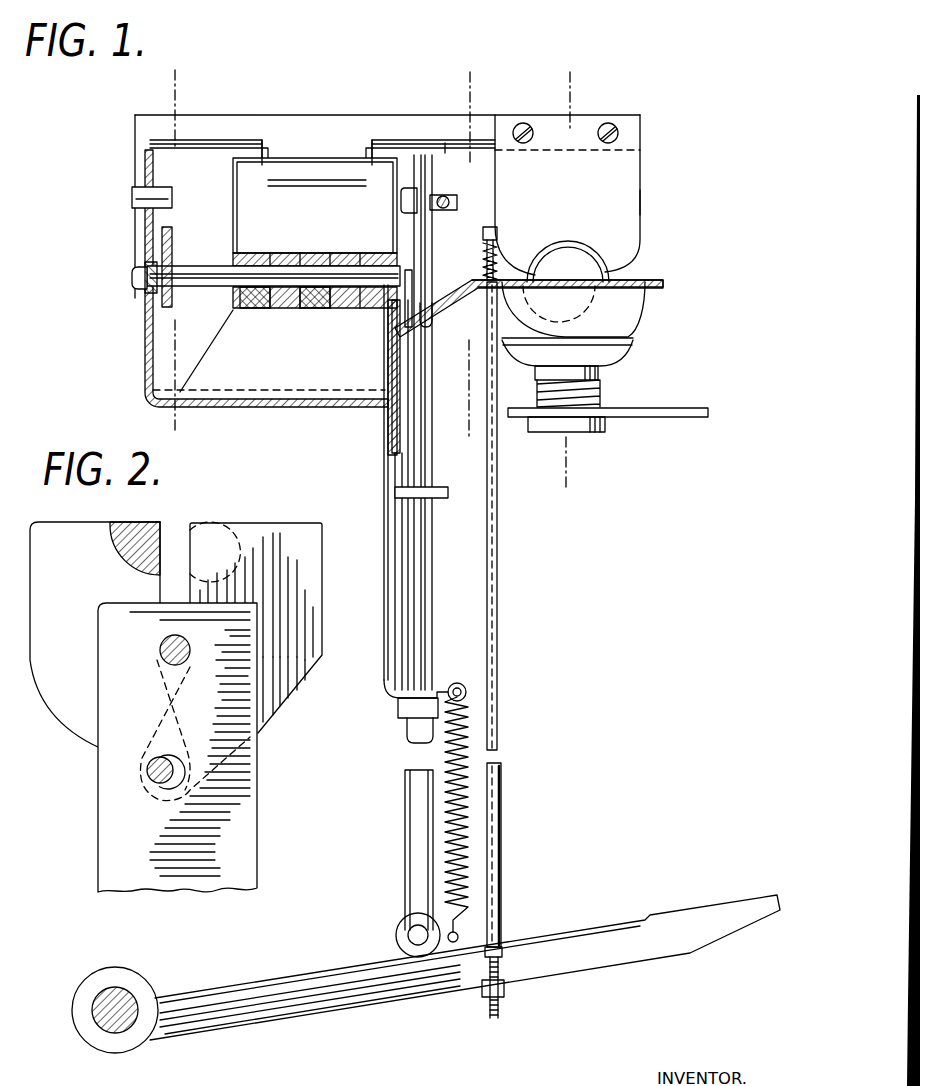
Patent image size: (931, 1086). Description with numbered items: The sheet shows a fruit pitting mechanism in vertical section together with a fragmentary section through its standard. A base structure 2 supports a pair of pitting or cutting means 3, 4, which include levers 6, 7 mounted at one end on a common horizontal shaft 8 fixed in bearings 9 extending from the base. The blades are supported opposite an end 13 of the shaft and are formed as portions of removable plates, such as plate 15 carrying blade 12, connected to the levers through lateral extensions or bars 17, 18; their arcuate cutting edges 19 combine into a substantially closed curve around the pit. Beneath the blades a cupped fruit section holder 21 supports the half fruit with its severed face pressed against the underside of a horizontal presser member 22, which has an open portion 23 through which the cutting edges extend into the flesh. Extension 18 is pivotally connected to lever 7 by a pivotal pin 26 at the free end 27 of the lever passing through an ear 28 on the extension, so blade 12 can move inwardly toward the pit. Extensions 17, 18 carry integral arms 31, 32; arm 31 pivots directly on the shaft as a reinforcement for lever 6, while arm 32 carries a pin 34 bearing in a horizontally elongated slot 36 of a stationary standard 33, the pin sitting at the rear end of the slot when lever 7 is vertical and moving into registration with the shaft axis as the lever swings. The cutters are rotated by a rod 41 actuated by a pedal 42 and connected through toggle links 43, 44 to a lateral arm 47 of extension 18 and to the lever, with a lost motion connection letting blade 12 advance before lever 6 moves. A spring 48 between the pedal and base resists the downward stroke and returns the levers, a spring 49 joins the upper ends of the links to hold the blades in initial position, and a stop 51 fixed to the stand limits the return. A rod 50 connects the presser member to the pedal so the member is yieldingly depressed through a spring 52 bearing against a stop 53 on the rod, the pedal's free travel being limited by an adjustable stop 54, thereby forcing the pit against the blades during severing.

In FIG. 1, the base structure 2 is at (160, 137).
In FIG. 1, the pitting or cutting means 3 is at (455, 82).
In FIG. 1, the pitting or cutting means 4 is at (650, 177).
In FIG. 1, the lever 6 is at (158, 83).
In FIG. 1, the lever 7 is at (556, 82).
In FIG. 1, the shaft 8 is at (300, 282).
In FIG. 1, the bearings 9 is at (253, 293).
In FIG. 1, the cutter blade 12 is at (643, 203).
In FIG. 1, the end of the shaft 13 is at (197, 277).
In FIG. 1, the removable plate 15 is at (620, 233).
In FIG. 2, the lateral extension or bar 17 is at (210, 522).
In FIG. 1, the lateral extension or bar 18 is at (447, 147).
In FIG. 2, the lateral extension or bar 18 is at (160, 521).
In FIG. 1, the arcuate cutting edges 19 is at (613, 260).
In FIG. 1, the fruit section holder 21 is at (627, 347).
In FIG. 1, the presser member or plate 22 is at (660, 278).
In FIG. 1, the open portion 23 is at (643, 313).
In FIG. 1, the pivotal pin 26 is at (232, 172).
In FIG. 1, the free end of the lever 27 is at (377, 163).
In FIG. 1, the ear 28 is at (317, 175).
In FIG. 1, the arm 31 is at (172, 234).
In FIG. 2, the arm 31 is at (303, 583).
In FIG. 1, the arm 32 is at (135, 163).
In FIG. 2, the arm 32 is at (58, 695).
In FIG. 1, the stationary standard 33 is at (147, 393).
In FIG. 2, the stationary standard 33 is at (230, 818).
In FIG. 1, the pin 34 is at (132, 277).
In FIG. 2, the pin 34 is at (143, 775).
In FIG. 1, the aperture or slot 36 is at (143, 305).
In FIG. 2, the aperture or slot 36 is at (177, 755).
In FIG. 1, the rod 41 is at (420, 553).
In FIG. 1, the pedal 42 is at (680, 910).
In FIG. 1, the toggle link 43 is at (410, 282).
In FIG. 1, the toggle link 44 is at (425, 253).
In FIG. 1, the lateral arm 47 is at (423, 181).
In FIG. 1, the spring 48 is at (452, 759).
In FIG. 1, the spring 49 is at (440, 208).
In FIG. 1, the rod 50 is at (502, 807).
In FIG. 1, the stop 51 is at (132, 198).
In FIG. 2, the stop 51 is at (160, 648).
In FIG. 1, the spring 52 is at (500, 257).
In FIG. 1, the stop 53 is at (498, 237).
In FIG. 1, the stop 54 is at (504, 987).